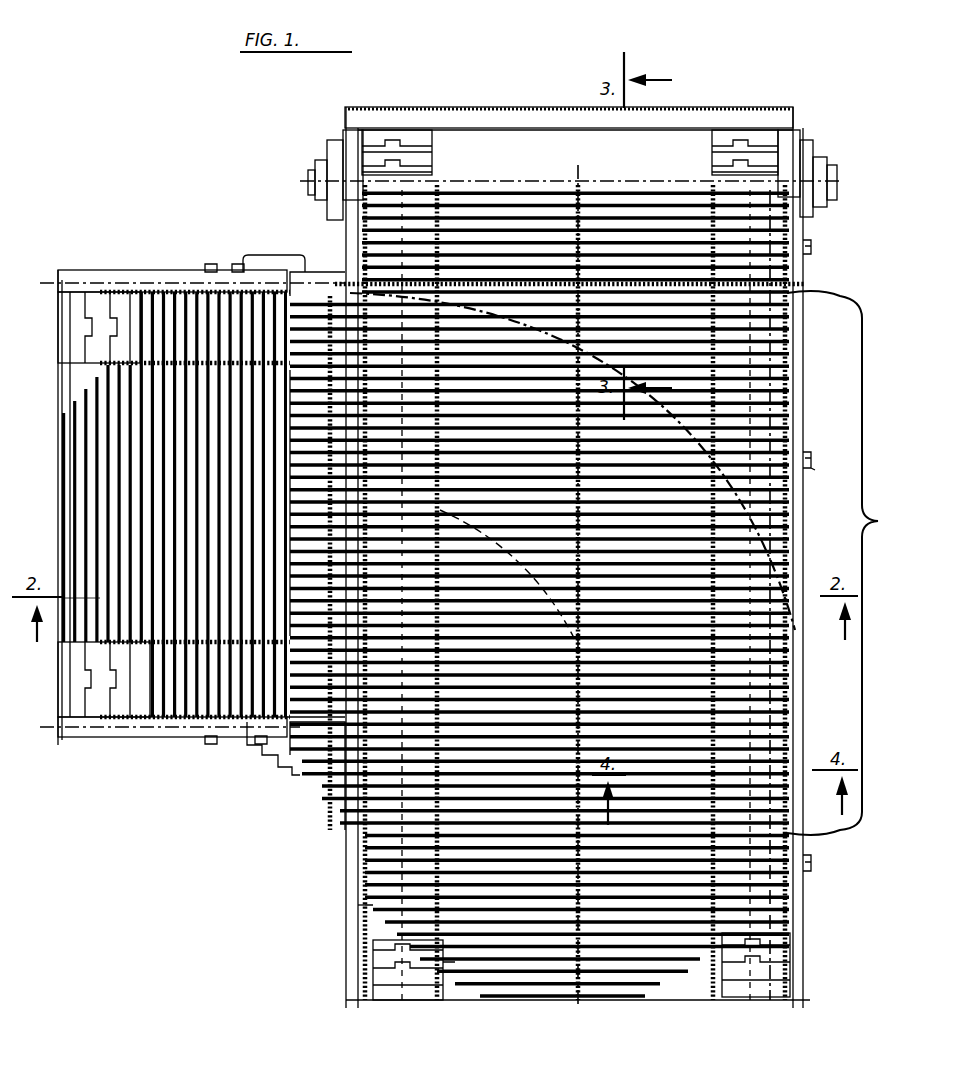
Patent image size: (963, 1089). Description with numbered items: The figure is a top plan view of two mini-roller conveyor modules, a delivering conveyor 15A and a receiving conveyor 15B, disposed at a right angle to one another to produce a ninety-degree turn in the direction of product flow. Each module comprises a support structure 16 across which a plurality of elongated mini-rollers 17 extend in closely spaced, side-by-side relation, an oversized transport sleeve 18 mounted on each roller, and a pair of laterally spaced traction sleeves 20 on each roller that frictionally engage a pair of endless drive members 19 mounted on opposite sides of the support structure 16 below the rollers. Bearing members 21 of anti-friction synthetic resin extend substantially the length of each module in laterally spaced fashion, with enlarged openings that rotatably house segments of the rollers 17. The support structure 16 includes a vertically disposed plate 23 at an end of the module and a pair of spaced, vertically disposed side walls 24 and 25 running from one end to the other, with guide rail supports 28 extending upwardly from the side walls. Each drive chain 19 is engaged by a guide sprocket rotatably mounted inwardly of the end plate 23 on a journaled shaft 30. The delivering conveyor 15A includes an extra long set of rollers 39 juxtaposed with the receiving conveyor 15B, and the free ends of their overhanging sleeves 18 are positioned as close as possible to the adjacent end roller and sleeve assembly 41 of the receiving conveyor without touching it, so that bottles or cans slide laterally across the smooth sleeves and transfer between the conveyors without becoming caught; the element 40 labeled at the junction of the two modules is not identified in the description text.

The delivering conveyor module 15A is at (553, 57).
The receiving conveyor module 15B is at (198, 183).
The support structure 16 is at (356, 142).
The mini-rollers 17 is at (174, 722).
The transport sleeve 18 is at (68, 406).
The endless drive members 19 is at (80, 338).
The traction sleeves 20 is at (134, 292).
The bearing members 21 is at (110, 366).
The vertically disposed plate 23 is at (688, 109).
The side wall 24 is at (808, 530).
The side wall 25 is at (80, 272).
The guide rail supports 28 is at (812, 256).
The journaled shaft 30 is at (835, 172).
The extra long set of rollers 39 is at (862, 712).
The connecting fitting 40 is at (286, 290).
The end roller and sleeve assembly 41 is at (792, 354).